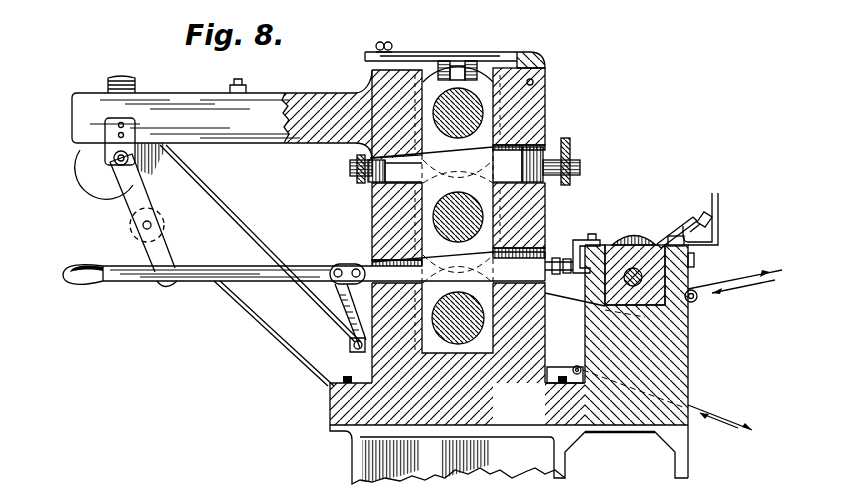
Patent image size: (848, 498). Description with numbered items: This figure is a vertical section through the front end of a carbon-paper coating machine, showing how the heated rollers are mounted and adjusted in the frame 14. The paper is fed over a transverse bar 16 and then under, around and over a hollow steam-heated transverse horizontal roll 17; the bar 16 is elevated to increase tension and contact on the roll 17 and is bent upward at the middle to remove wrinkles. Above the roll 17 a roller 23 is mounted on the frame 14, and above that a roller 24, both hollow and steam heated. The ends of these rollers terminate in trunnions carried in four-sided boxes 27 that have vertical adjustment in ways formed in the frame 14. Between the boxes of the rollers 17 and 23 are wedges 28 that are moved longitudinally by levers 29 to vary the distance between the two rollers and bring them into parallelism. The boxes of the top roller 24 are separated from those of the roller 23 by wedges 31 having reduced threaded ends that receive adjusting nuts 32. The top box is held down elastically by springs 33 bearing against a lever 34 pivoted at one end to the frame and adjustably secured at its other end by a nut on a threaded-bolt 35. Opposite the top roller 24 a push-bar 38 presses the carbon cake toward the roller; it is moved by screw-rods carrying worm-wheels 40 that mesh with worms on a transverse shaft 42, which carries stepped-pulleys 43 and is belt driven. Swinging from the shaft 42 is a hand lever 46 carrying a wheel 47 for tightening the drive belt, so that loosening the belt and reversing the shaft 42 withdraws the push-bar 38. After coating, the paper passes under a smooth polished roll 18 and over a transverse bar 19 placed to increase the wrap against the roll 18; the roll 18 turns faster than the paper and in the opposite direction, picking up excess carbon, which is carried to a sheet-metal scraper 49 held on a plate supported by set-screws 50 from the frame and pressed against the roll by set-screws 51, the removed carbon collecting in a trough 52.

The frame 14 is at (371, 205).
The transverse bar 16 is at (576, 367).
The transverse horizontal roll 17 is at (540, 331).
The roll 18 is at (626, 243).
The transverse bar 19 is at (697, 297).
The roller 23 is at (548, 210).
The roller 24 is at (548, 100).
The four-sided boxes 27 is at (458, 212).
The wedges 28 is at (472, 264).
The levers 29 is at (200, 282).
The wedges 31 is at (519, 163).
The adjusting nuts 32 is at (350, 160).
The springs 33 is at (471, 60).
The lever 34 is at (506, 52).
The threaded-bolt 35 is at (381, 42).
The push-bar 38 is at (232, 87).
The worm-wheels 40 is at (120, 77).
The transverse shaft 42 is at (110, 168).
The stepped-pulleys 43 is at (82, 165).
The lever 46 is at (152, 250).
The wheel 47 is at (152, 221).
The scraper 49 is at (656, 240).
The set-screws 50 is at (684, 220).
The set-screws 51 is at (716, 216).
The trough 52 is at (720, 226).